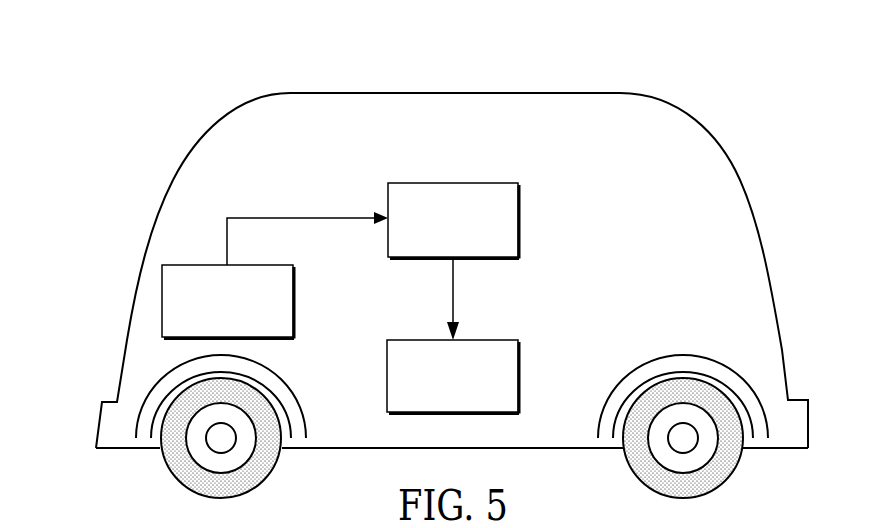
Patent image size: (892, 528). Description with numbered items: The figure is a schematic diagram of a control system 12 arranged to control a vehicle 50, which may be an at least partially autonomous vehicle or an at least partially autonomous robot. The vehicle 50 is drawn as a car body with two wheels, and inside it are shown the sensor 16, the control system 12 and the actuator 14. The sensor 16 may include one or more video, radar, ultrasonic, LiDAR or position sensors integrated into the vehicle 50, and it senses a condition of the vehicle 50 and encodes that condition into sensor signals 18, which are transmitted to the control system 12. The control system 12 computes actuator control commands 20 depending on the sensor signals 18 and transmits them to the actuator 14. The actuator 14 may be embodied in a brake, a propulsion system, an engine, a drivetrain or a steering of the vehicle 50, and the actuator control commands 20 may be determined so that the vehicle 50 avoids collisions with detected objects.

The vehicle 50 is at (108, 50).
The control system 12 is at (452, 183).
The actuator 14 is at (387, 373).
The sensor 16 is at (293, 301).
The sensor signals 18 is at (308, 218).
The actuator control commands 20 is at (453, 297).